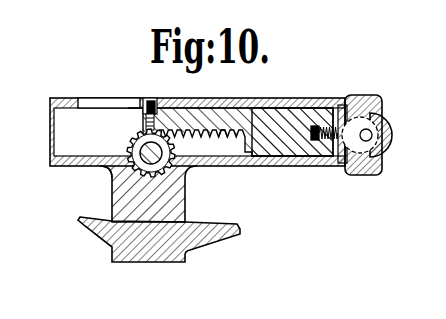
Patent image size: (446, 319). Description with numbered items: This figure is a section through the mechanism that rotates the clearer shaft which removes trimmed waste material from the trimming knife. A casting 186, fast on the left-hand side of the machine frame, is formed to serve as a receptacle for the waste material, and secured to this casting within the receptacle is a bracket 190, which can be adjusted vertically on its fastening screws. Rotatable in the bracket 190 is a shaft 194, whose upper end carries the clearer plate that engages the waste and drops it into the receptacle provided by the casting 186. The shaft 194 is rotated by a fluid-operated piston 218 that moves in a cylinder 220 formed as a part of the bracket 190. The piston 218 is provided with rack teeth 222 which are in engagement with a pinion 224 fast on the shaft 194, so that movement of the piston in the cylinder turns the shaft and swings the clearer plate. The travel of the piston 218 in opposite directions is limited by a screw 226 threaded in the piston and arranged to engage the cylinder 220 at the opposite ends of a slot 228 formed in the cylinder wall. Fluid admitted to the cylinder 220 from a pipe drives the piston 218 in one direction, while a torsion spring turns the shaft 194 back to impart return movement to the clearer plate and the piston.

The casting 186 is at (218, 238).
The bracket 190 is at (183, 181).
The shaft 194 is at (110, 176).
The fluid-operated piston 218 is at (294, 118).
The cylinder 220 is at (237, 107).
The rack teeth 222 is at (236, 139).
The pinion 224 is at (129, 146).
The screw 226 is at (153, 110).
The slot 228 is at (100, 107).